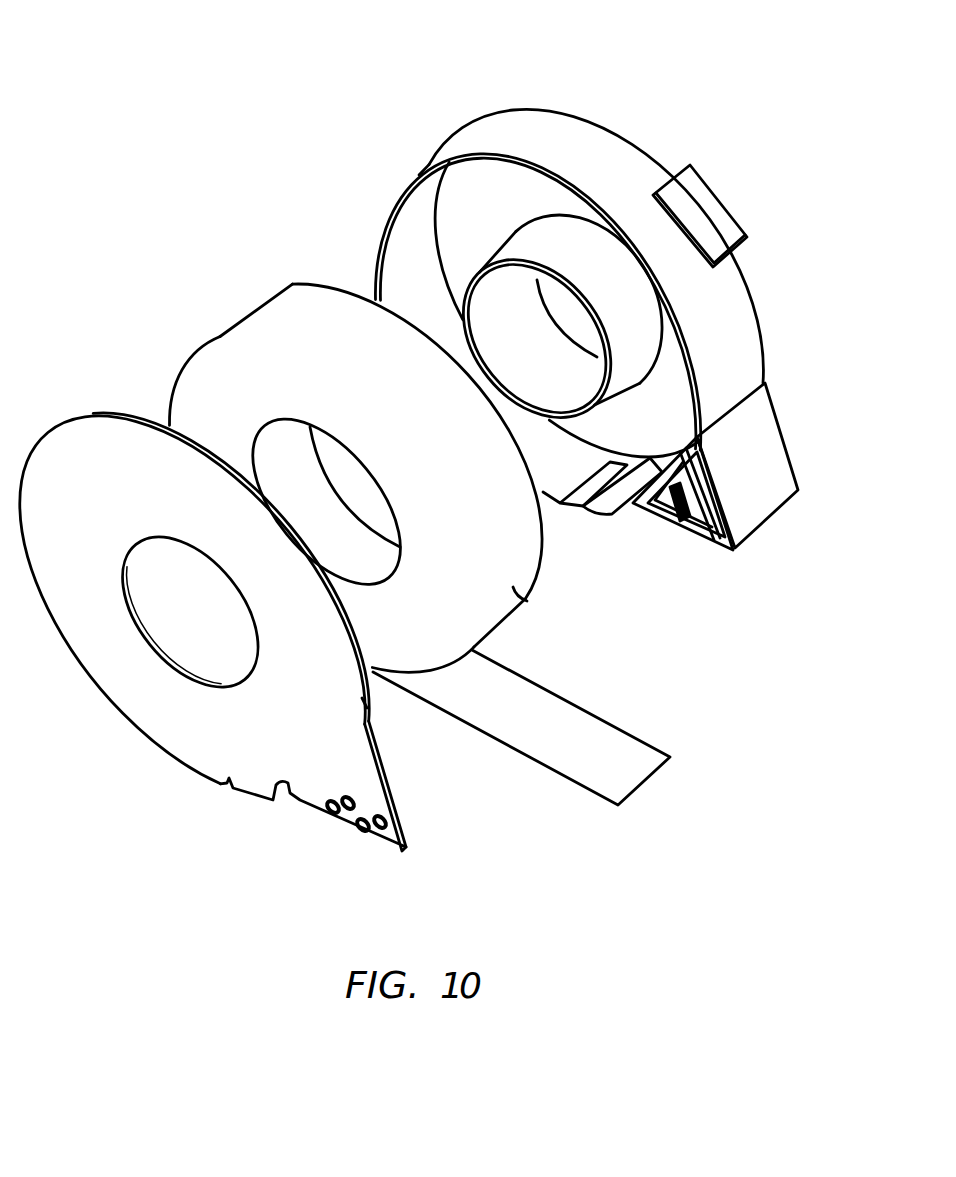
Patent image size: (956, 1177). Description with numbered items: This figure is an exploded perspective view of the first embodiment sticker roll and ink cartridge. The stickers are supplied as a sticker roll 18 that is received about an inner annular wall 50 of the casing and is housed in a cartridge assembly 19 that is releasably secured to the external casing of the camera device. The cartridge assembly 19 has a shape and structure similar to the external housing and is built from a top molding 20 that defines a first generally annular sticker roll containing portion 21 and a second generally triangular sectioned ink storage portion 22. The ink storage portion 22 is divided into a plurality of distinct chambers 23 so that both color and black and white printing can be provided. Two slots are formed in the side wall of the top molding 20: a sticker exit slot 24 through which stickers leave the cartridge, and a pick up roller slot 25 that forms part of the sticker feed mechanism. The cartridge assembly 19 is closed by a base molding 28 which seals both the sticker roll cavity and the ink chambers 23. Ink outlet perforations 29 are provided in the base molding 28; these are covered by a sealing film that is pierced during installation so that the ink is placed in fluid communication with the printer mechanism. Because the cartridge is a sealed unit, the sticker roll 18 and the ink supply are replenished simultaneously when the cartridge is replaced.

The sticker roll 18 is at (520, 593).
The cartridge assembly 19 is at (551, 86).
The top molding 20 is at (600, 142).
The sticker roll containing portion 21 is at (437, 223).
The ink storage portion 22 is at (770, 460).
The chambers 23 is at (733, 525).
The sticker exit slot 24 is at (578, 507).
The pick up roller slot 25 is at (628, 507).
The base molding 28 is at (166, 709).
The ink outlet perforations 29 is at (359, 832).
The inner annular wall 50 is at (620, 317).